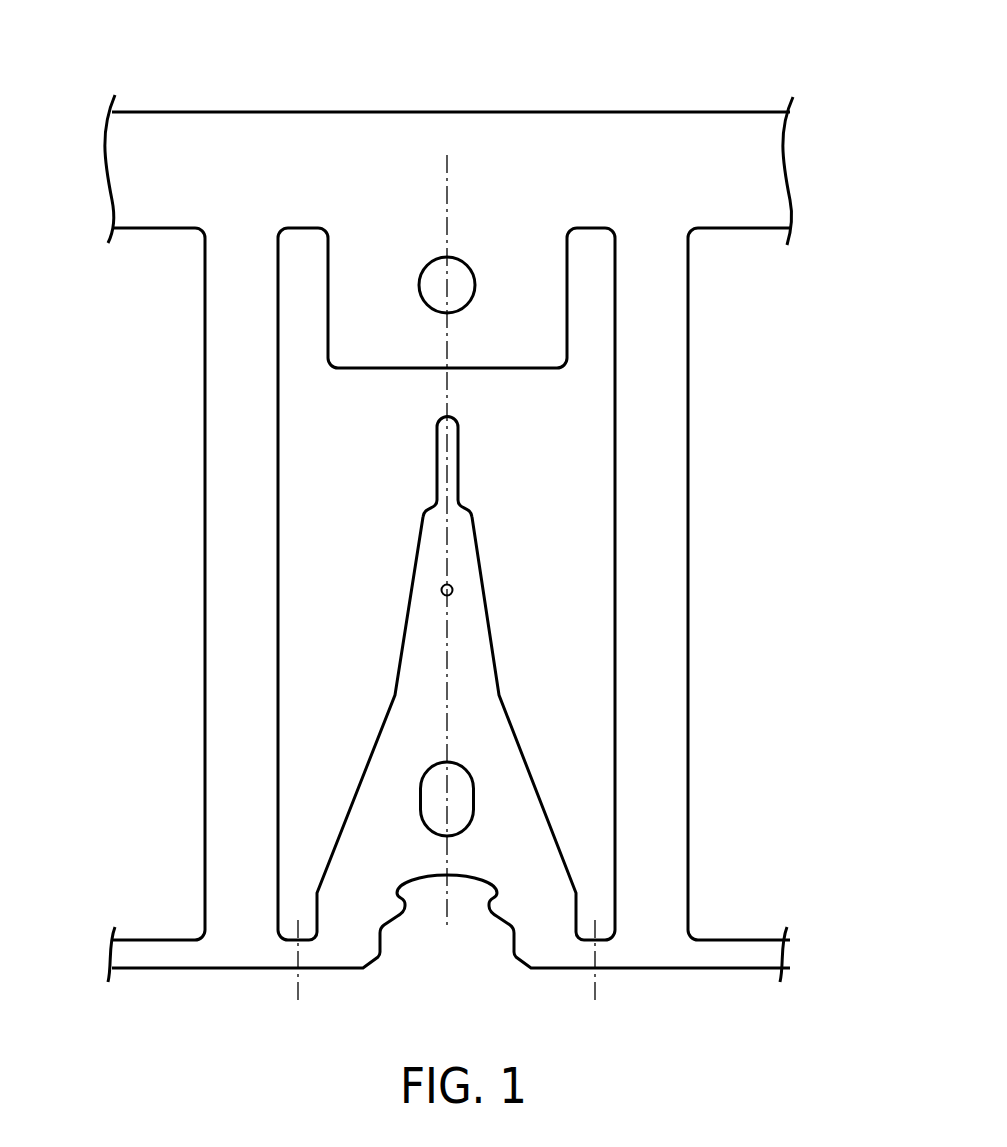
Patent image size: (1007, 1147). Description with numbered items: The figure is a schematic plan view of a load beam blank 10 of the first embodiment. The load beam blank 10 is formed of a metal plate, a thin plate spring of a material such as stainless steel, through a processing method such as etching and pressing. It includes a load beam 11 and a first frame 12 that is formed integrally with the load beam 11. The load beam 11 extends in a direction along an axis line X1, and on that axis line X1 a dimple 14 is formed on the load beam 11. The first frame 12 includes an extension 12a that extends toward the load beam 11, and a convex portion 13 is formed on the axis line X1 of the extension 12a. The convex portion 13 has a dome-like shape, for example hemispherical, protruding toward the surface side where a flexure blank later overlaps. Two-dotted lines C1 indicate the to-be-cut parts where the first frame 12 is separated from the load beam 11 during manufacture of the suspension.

The load beam blank 10 is at (609, 73).
The load beam 11 is at (458, 537).
The first frame 12 is at (238, 125).
The extension 12a is at (360, 347).
The convex portion 13 is at (465, 287).
The dimple 14 is at (453, 590).
The axis line X1 is at (450, 200).
The two-dotted lines C1 is at (298, 994).